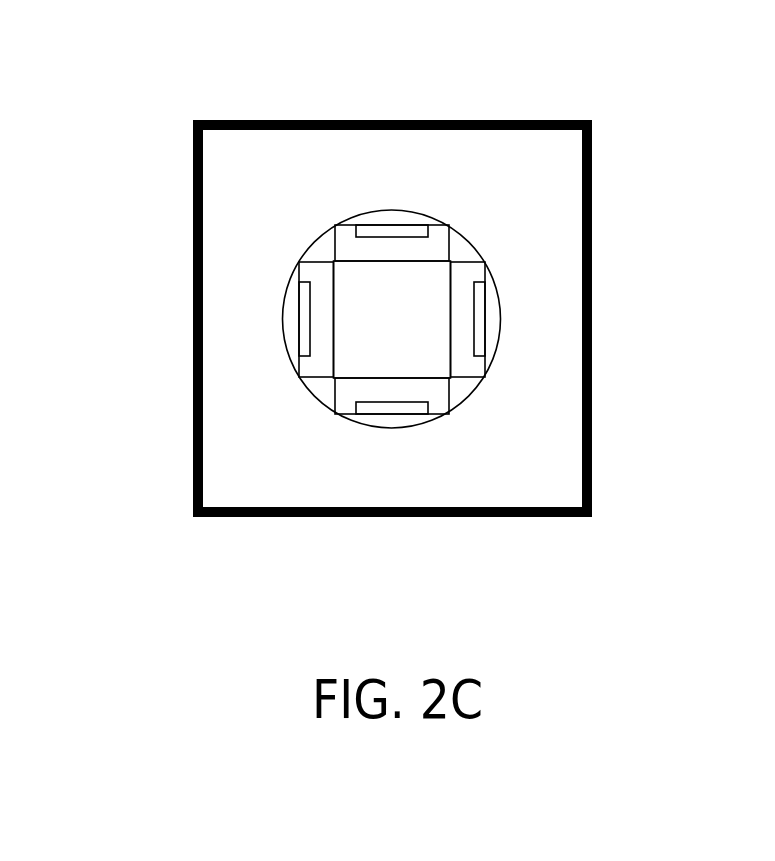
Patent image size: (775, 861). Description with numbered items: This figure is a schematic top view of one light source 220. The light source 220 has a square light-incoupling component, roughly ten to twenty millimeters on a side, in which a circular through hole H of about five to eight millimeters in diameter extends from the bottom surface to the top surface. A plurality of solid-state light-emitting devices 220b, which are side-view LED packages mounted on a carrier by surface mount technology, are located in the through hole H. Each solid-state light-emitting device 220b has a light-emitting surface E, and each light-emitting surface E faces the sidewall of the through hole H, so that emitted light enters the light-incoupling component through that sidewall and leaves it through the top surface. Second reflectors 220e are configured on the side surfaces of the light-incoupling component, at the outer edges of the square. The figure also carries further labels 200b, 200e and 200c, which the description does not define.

The light source 220 is at (688, 586).
The second reflector 220e is at (293, 120).
The solid-state light-emitting device 220b is at (438, 228).
The block of substrate 200b is at (473, 366).
The edge of substrate 200e is at (592, 418).
The surface of substrate 200c is at (557, 478).
The light-emitting surface E is at (387, 233).
The through hole H is at (398, 303).